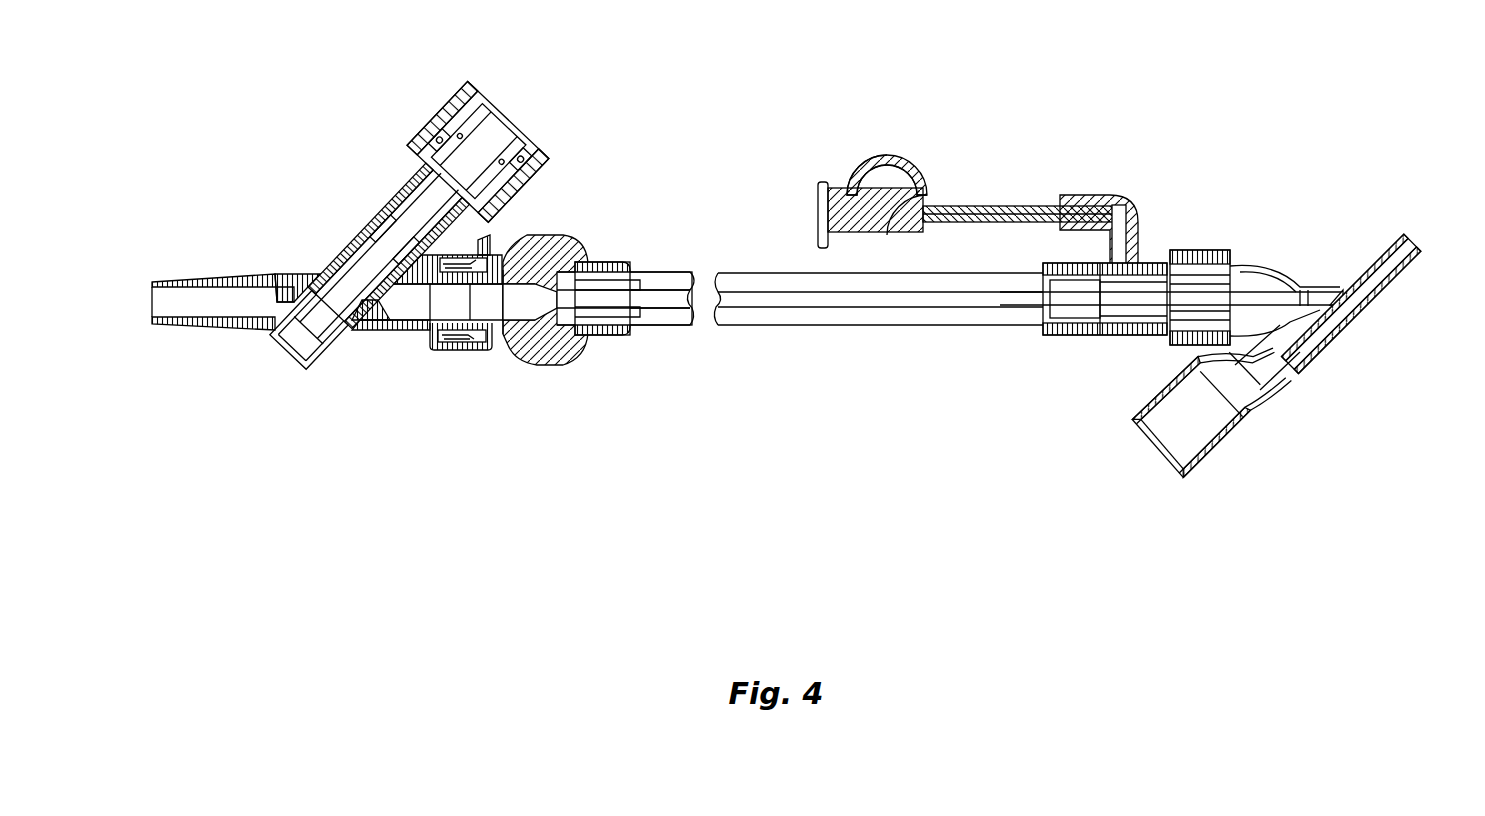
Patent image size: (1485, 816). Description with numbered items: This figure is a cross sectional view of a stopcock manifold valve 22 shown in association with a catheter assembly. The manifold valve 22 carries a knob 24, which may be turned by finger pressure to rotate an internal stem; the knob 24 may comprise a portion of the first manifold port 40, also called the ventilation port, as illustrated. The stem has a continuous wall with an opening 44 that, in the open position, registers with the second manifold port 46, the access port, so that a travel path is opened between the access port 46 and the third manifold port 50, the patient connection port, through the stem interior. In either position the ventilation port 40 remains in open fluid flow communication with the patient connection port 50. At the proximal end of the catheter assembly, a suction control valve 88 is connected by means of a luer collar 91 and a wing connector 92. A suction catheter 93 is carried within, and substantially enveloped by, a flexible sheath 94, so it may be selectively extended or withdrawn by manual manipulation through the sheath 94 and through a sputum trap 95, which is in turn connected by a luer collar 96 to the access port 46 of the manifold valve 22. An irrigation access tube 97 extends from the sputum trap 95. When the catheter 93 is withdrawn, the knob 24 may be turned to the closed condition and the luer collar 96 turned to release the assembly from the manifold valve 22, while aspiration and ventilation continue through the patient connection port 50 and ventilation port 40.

The stopcock manifold valve 22 is at (1118, 525).
The knob 24 is at (1253, 418).
The first manifold port 40 is at (1183, 443).
The opening 44 is at (1337, 282).
The second manifold port 46 is at (1255, 262).
The third manifold port 50 is at (1412, 245).
The suction control valve 88 is at (345, 362).
The luer collar 91 is at (612, 347).
The wing connector 92 is at (537, 353).
The suction catheter 93 is at (665, 274).
The flexible sheath 94 is at (748, 326).
The sputum trap 95 is at (1120, 312).
The luer collar 96 is at (1197, 255).
The irrigation access tube 97 is at (1020, 210).